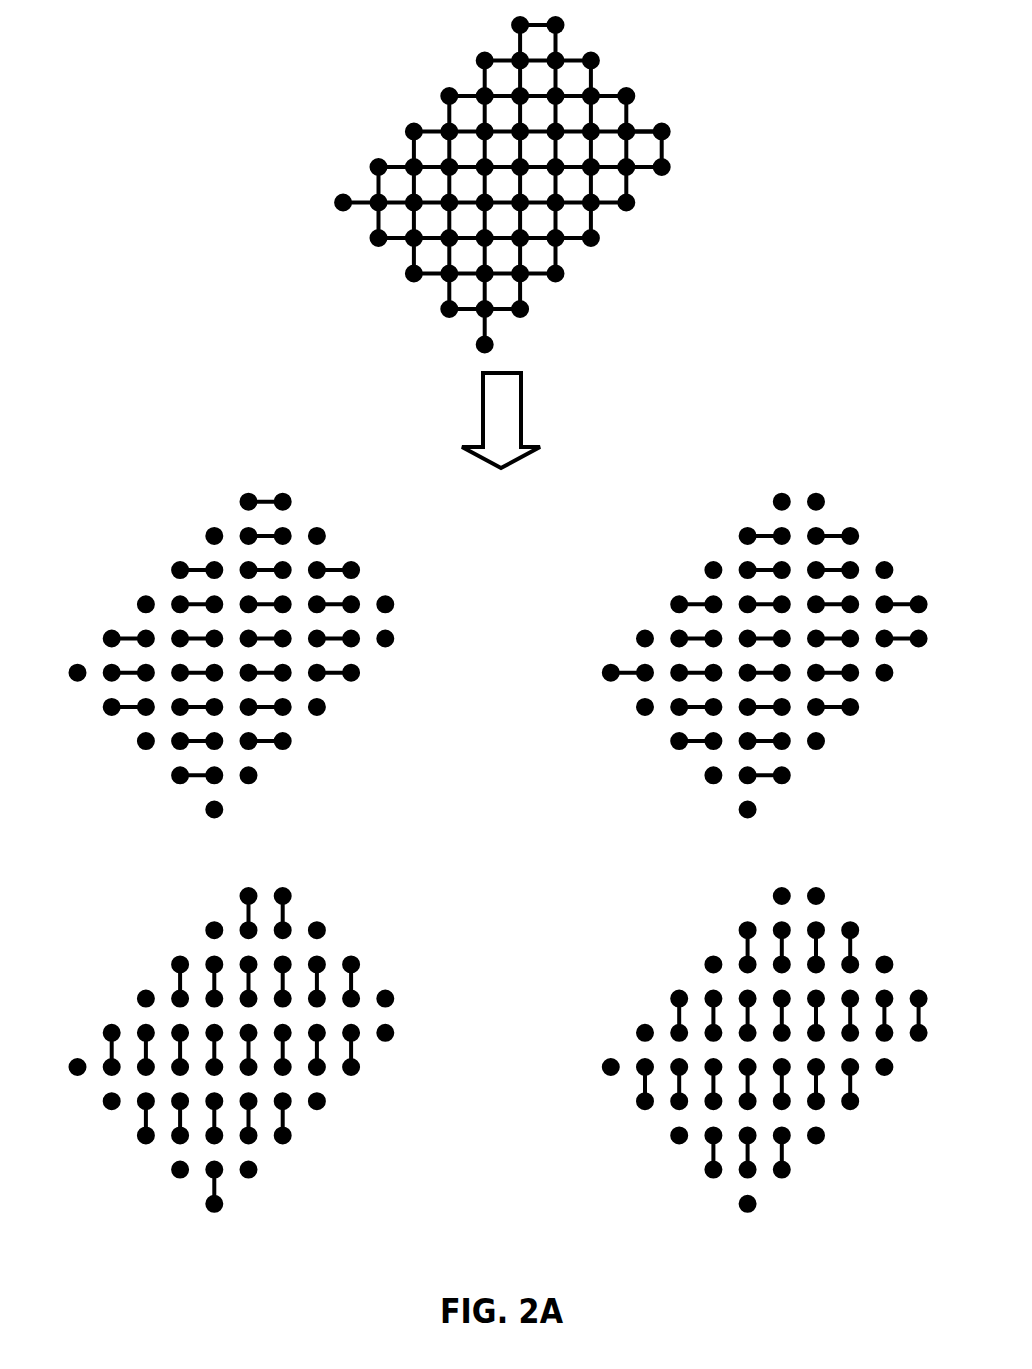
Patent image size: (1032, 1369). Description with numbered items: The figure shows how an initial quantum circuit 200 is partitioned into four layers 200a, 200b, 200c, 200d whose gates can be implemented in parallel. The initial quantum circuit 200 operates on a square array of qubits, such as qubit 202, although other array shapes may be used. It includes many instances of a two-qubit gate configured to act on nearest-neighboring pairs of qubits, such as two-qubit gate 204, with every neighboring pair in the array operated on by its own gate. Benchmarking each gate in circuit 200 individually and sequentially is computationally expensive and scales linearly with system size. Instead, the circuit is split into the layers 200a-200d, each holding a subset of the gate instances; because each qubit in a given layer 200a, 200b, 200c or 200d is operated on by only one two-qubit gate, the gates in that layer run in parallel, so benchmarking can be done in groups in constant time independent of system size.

The initial quantum circuit 200 is at (476, 178).
The qubit 202 is at (564, 25).
The two-qubit gate 204 is at (640, 130).
The layer 200a is at (143, 542).
The layer 200b is at (143, 933).
The layer 200c is at (699, 544).
The layer 200d is at (699, 936).